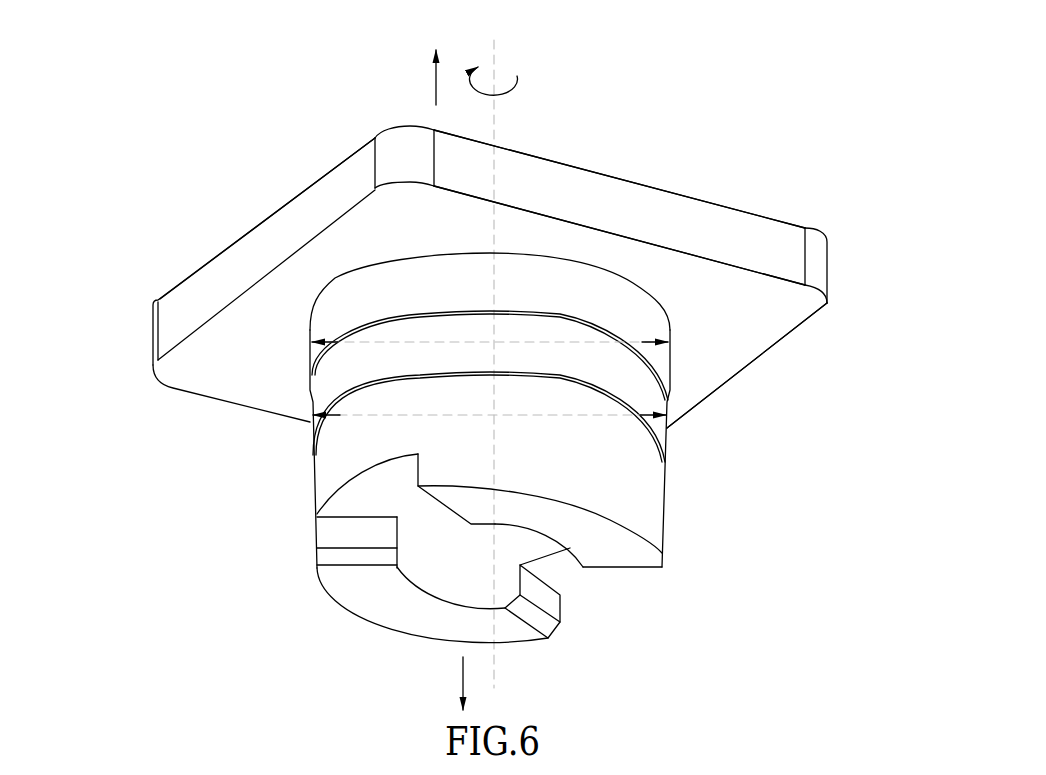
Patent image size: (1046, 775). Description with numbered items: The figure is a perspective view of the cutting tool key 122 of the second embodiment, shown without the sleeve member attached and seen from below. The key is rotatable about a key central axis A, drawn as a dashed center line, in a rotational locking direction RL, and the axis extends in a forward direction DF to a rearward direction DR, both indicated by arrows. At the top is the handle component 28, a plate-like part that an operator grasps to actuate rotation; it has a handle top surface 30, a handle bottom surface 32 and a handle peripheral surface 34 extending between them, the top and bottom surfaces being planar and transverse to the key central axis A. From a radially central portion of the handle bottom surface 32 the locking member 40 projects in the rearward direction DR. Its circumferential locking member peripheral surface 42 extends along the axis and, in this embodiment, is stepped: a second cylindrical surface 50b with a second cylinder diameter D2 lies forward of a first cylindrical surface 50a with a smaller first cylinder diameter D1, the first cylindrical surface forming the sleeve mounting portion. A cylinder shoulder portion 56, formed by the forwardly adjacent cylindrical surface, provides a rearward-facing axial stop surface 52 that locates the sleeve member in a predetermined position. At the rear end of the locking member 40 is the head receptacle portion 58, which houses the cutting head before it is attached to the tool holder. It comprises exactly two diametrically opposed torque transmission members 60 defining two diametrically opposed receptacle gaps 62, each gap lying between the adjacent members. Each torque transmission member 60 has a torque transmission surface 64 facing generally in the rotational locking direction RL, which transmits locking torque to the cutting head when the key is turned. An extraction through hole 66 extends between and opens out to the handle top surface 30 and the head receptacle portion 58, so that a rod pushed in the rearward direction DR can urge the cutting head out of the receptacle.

The cutting tool key 122 is at (203, 198).
The handle component 28 is at (733, 200).
The handle top surface 30 is at (588, 167).
The handle bottom surface 32 is at (617, 247).
The handle peripheral surface 34 is at (610, 202).
The locking member 40 is at (738, 452).
The locking member peripheral surface 42 is at (350, 451).
The first cylindrical surface 50a is at (345, 378).
The second cylindrical surface 50b is at (353, 315).
The axial stop surface 52 is at (345, 358).
The cylinder shoulder portion 56 is at (345, 358).
The head receptacle portion 58 is at (677, 567).
The torque transmission member 60 is at (583, 530).
The receptacle gap 62 is at (415, 510).
The torque transmission surface 64 is at (418, 470).
The extraction through hole 66 is at (442, 583).
The first cylinder diameter D1 is at (597, 415).
The second cylinder diameter D2 is at (608, 342).
The key central axis A is at (493, 352).
The forward direction DF is at (419, 77).
The rearward direction DR is at (446, 681).
The rotational locking direction RL is at (507, 87).